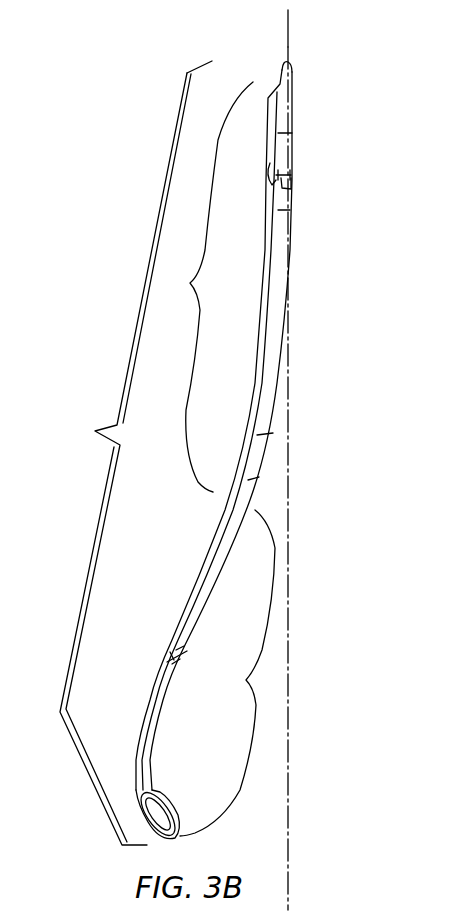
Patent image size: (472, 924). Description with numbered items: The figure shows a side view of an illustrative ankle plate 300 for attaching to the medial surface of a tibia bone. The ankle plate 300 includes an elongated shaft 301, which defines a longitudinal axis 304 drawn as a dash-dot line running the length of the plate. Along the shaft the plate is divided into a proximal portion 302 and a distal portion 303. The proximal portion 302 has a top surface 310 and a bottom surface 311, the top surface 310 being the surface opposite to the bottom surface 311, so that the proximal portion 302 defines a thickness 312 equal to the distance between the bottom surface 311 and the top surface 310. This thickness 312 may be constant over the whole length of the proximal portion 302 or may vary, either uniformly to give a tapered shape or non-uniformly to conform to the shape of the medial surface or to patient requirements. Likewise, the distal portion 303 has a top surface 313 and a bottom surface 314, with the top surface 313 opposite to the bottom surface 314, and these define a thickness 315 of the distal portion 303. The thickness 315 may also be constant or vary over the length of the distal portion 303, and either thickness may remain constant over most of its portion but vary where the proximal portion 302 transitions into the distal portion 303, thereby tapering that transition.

The ankle plate 300 is at (356, 80).
The elongated shaft 301 is at (135, 453).
The proximal portion 302 is at (205, 287).
The distal portion 303 is at (233, 673).
The longitudinal axis 304 is at (287, 37).
The top surface 310 is at (270, 178).
The bottom surface 311 is at (292, 174).
The thickness 312 is at (290, 189).
The top surface 313 is at (172, 656).
The bottom surface 314 is at (178, 663).
The thickness 315 is at (183, 648).